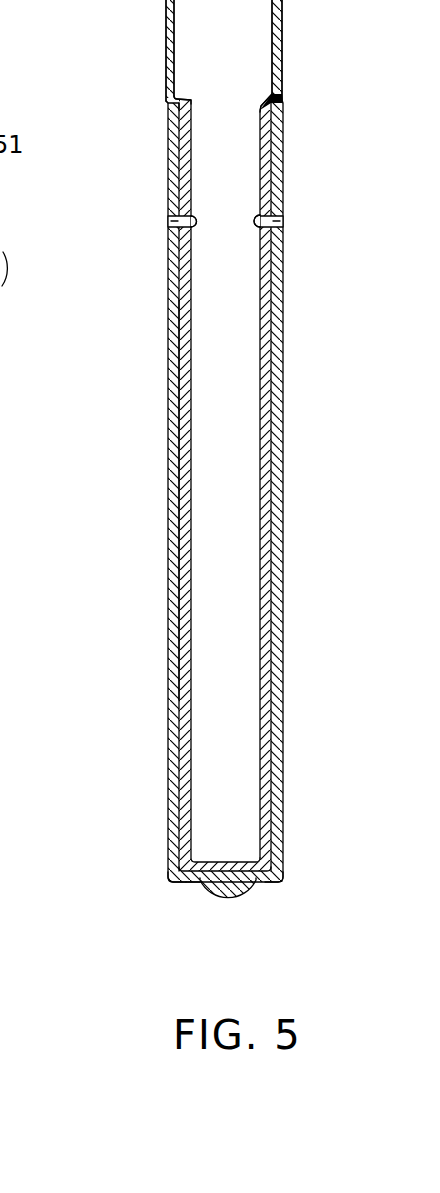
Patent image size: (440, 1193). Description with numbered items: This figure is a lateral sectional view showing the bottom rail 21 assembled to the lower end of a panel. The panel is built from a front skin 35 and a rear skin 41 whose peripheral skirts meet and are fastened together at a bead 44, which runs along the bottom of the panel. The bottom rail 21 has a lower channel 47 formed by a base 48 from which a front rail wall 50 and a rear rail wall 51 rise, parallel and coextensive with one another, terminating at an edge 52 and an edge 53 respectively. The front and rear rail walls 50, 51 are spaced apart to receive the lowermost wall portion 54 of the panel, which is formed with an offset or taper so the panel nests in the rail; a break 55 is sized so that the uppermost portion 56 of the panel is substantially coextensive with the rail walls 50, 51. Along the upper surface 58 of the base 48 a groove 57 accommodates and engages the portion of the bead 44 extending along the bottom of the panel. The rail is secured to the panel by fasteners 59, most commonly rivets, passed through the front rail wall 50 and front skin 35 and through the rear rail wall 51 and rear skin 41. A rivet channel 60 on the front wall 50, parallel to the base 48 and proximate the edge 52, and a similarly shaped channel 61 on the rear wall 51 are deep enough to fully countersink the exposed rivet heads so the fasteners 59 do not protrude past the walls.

The bottom rail 21 is at (168, 720).
The front skin 35 is at (183, 298).
The rear skin 41 is at (266, 356).
The bead 44 is at (228, 865).
The lower channel 47 is at (168, 870).
The base 48 is at (284, 874).
The front rail wall 50 is at (168, 404).
The rear rail wall 51 is at (283, 496).
The edge 52 is at (168, 104).
The edge 53 is at (285, 102).
The lowermost wall portion 54 is at (180, 507).
The break 55 is at (178, 99).
The uppermost portion 56 is at (167, 54).
The groove 57 is at (201, 884).
The upper surface 58 is at (198, 889).
The fasteners 59 is at (168, 216).
The rivet channel 60 is at (167, 238).
The channel 61 is at (282, 233).